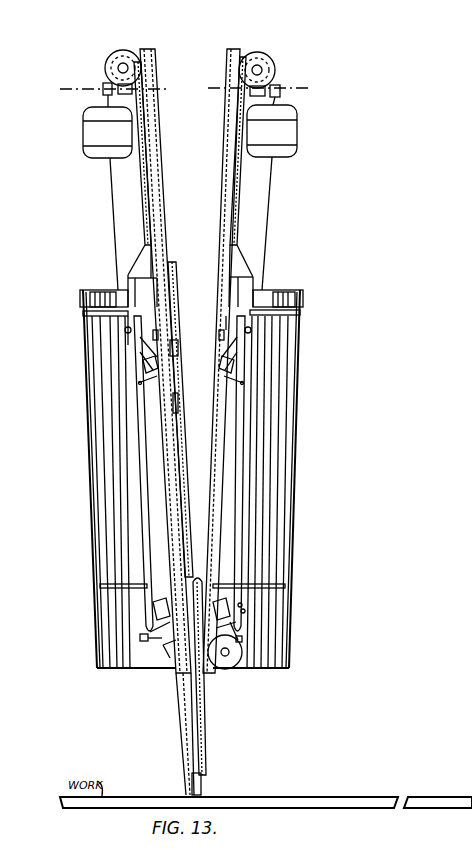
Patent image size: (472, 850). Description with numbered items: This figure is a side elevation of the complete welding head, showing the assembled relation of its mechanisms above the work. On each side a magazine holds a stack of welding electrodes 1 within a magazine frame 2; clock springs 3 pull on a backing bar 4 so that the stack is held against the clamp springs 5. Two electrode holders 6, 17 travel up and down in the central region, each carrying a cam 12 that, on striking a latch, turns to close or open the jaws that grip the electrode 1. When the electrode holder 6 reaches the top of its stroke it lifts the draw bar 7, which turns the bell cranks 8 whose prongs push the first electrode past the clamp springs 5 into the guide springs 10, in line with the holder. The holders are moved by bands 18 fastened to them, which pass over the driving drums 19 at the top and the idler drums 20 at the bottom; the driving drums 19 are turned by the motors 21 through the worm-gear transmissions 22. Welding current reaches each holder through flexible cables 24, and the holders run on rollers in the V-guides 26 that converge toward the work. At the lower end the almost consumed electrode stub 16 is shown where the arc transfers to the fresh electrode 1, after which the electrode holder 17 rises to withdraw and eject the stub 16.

The welding electrode 1 is at (107, 428).
The magazine frame 2 is at (84, 294).
The clock spring 3 is at (218, 576).
The backing bar 4 is at (80, 301).
The clamp spring 5 is at (130, 321).
The electrode holder 6 is at (168, 376).
The draw bar 7 is at (143, 216).
The bell crank 8 is at (148, 385).
The guide spring 10 is at (146, 346).
The cam 12 is at (181, 398).
The electrode stub 16 is at (203, 782).
The electrode holder 17 is at (197, 727).
The band 18 is at (111, 188).
The driving drum 19 is at (112, 57).
The idler drum 20 is at (233, 667).
The motor 21 is at (84, 130).
The worm-gear transmission 22 is at (104, 84).
The flexible cable 24 is at (177, 288).
The V-guide 26 is at (158, 135).